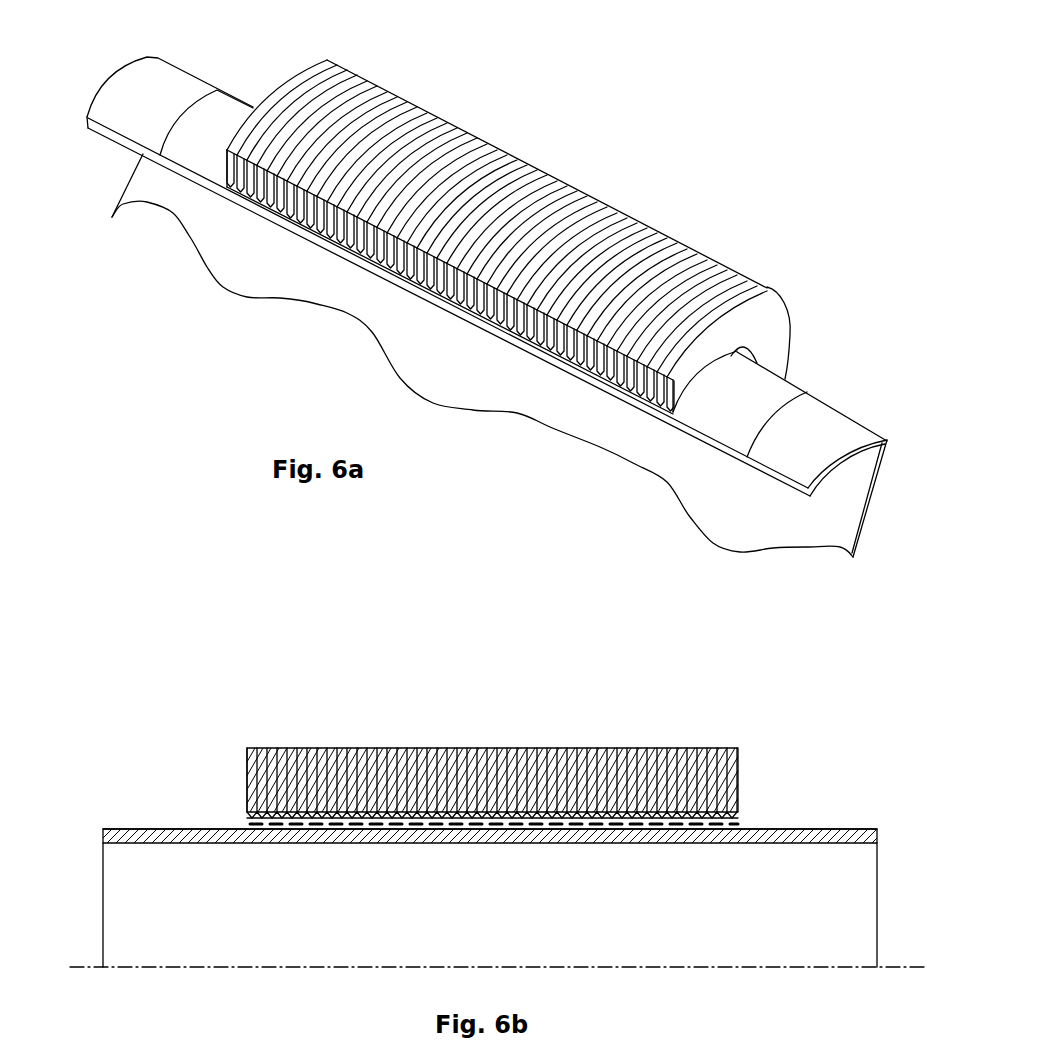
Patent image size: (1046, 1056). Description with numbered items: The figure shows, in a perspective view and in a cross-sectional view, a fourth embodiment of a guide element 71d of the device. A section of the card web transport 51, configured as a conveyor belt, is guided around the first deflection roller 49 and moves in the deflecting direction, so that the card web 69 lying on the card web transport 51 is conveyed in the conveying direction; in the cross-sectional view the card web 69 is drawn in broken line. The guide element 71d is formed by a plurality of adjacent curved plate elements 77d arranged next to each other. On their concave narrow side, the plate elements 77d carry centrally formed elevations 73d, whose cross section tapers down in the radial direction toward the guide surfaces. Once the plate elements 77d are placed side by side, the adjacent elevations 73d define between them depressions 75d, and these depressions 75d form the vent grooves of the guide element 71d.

In FIG. 6A, the first deflection roller 49 is at (820, 430).
In FIG. 6B, the first deflection roller 49 is at (837, 837).
In FIG. 6A, the card web transport 51 is at (770, 393).
In FIG. 6B, the card web transport 51 is at (760, 830).
In FIG. 6B, the card web 69 is at (248, 823).
In FIG. 6A, the guide element 71d is at (508, 216).
In FIG. 6B, the guide element 71d is at (488, 800).
In FIG. 6A, the elevations 73d is at (315, 240).
In FIG. 6B, the elevations 73d is at (327, 817).
In FIG. 6A, the depressions 75d is at (392, 282).
In FIG. 6B, the depressions 75d is at (373, 817).
In FIG. 6A, the plate elements 77d is at (440, 143).
In FIG. 6B, the plate elements 77d is at (350, 748).